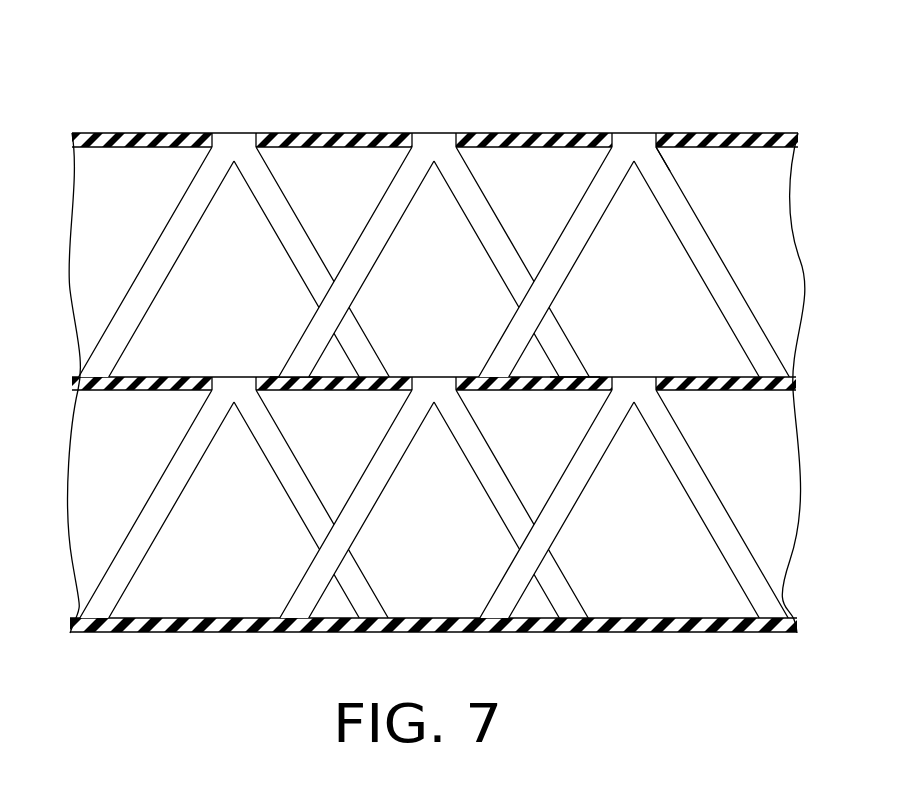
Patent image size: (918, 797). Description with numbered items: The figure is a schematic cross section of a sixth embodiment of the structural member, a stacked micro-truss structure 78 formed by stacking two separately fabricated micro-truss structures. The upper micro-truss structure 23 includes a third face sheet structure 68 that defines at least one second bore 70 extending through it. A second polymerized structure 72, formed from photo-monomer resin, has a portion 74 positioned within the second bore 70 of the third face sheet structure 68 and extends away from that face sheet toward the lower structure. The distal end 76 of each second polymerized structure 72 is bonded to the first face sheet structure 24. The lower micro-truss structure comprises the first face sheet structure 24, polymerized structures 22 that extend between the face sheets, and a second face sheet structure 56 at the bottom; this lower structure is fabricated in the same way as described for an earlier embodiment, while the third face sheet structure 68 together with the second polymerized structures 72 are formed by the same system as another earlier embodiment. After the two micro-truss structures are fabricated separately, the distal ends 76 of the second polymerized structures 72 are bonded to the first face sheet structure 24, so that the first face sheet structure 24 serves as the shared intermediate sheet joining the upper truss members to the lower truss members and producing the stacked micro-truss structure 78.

The stacked micro-truss structure 78 is at (429, 340).
The micro-truss structure 23 is at (429, 346).
The third face sheet structure 68 is at (429, 109).
The second bore 70 is at (228, 128).
The second polymerized structure 72 is at (183, 230).
The portion 74 is at (613, 140).
The distal end 76 is at (284, 376).
The first face sheet structure 24 is at (120, 385).
The polymerized structures 22 is at (170, 488).
The second face sheet structure 56 is at (693, 626).